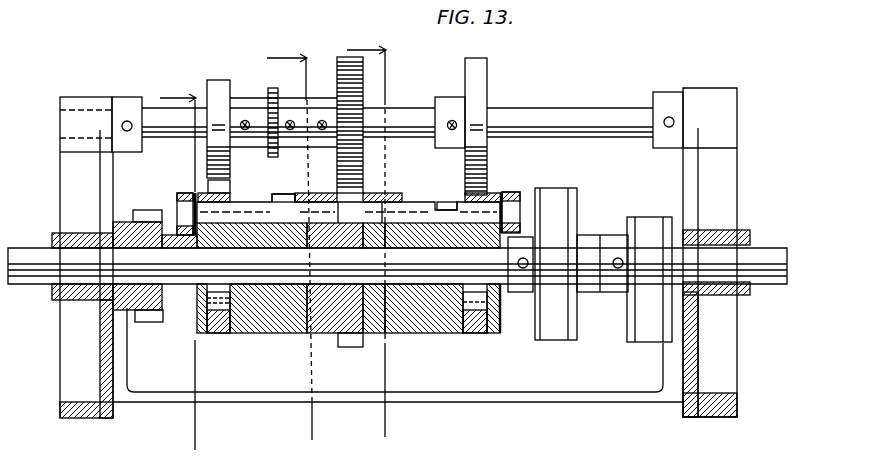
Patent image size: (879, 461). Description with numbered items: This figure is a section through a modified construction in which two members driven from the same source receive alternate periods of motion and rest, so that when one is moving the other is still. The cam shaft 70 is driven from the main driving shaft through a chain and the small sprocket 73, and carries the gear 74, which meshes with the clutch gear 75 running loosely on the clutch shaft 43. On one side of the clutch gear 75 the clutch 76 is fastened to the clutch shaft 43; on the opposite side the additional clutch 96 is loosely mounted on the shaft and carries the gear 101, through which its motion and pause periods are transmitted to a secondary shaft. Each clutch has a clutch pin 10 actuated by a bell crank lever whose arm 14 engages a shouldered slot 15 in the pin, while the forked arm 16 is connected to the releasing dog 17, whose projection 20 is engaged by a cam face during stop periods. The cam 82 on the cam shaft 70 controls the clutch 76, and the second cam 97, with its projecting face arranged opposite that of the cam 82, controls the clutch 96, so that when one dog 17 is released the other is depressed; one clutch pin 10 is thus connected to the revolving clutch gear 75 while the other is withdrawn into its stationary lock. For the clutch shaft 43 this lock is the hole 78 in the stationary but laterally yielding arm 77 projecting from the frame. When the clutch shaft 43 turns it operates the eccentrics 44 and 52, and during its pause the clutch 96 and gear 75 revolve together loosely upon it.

The clutch pin 10 is at (251, 207).
The arm 14 is at (442, 206).
The shouldered slot 15 is at (294, 247).
The forked arm 16 is at (374, 244).
The releasing dog 17 is at (212, 331).
The projection 20 is at (228, 187).
The clutch shaft 43 is at (738, 226).
The eccentric 44 is at (562, 205).
The eccentric 52 is at (648, 323).
The cam shaft 70 is at (552, 118).
The small sprocket 73 is at (273, 88).
The gear 74 is at (341, 57).
The clutch gear 75 is at (355, 345).
The clutch 76 is at (432, 322).
The laterally yielding arm 77 is at (181, 193).
The hole 78 is at (187, 207).
The cam 82 is at (478, 85).
The additional clutch 96 is at (259, 331).
The second cam 97 is at (218, 88).
The gear 101 is at (153, 322).